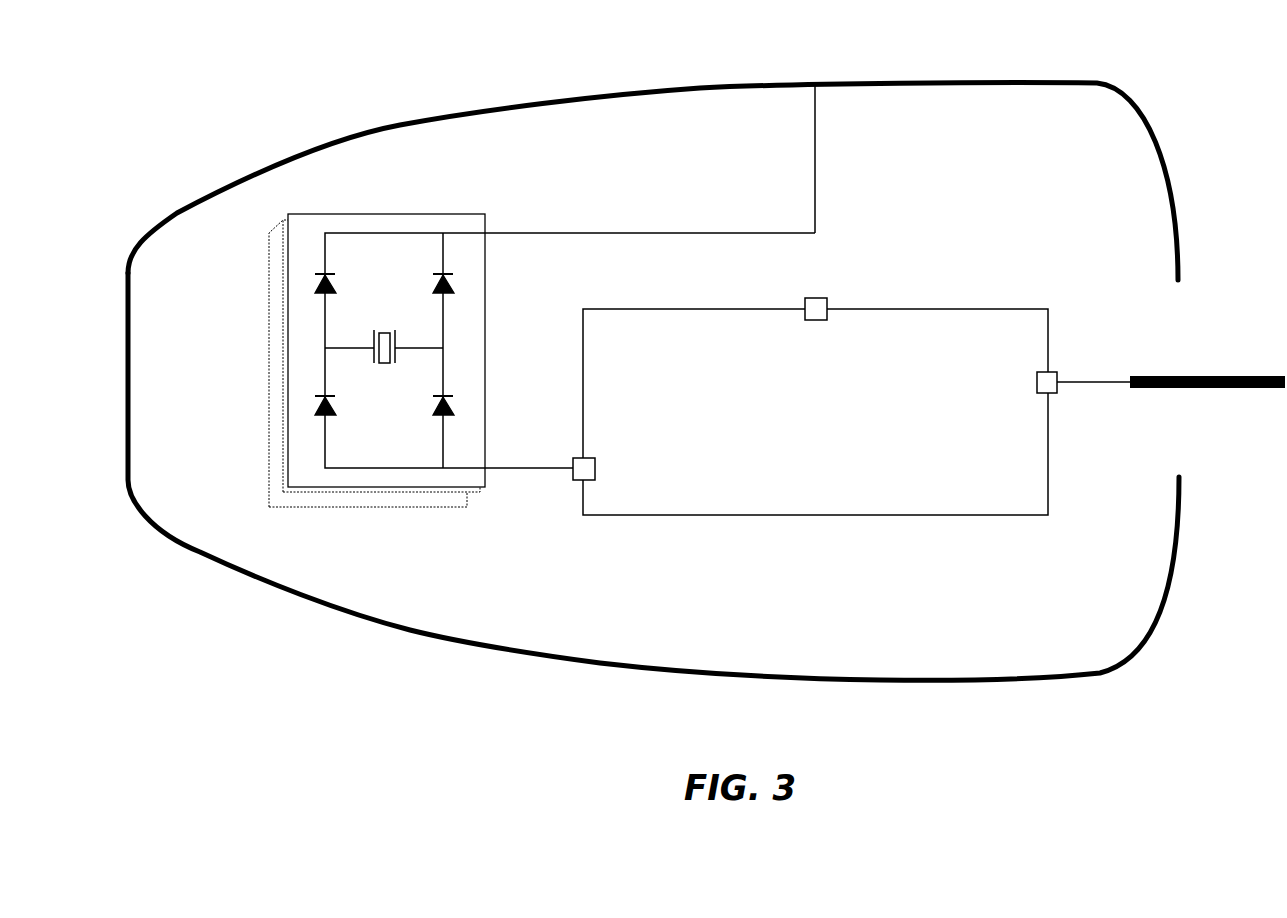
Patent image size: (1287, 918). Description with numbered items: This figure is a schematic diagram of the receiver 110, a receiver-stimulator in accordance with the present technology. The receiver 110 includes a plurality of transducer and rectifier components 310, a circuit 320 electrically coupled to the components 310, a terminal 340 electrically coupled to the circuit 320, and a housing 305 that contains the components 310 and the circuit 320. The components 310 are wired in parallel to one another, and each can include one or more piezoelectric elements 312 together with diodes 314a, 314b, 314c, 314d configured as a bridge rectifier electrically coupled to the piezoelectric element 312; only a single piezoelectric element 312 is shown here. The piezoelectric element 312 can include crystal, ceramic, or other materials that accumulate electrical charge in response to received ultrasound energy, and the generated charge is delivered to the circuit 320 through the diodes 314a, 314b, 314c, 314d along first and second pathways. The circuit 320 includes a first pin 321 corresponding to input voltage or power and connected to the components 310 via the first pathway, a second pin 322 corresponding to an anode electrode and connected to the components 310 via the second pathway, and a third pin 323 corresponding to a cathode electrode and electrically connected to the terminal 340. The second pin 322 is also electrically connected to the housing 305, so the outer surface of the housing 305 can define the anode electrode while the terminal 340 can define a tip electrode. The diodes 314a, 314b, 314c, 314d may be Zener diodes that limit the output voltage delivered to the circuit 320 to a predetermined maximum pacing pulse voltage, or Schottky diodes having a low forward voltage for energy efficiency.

The receiver 110 is at (186, 118).
The housing 305 is at (599, 93).
The transducer and rectifier components 310 is at (436, 196).
The piezoelectric element 312 is at (386, 331).
The diode 314a is at (335, 282).
The diode 314b is at (452, 282).
The diode 314c is at (335, 403).
The diode 314d is at (452, 403).
The circuit 320 is at (932, 308).
The first pin 321 is at (573, 481).
The second pin 322 is at (826, 298).
The third pin 323 is at (1050, 394).
The terminal 340 is at (1220, 376).